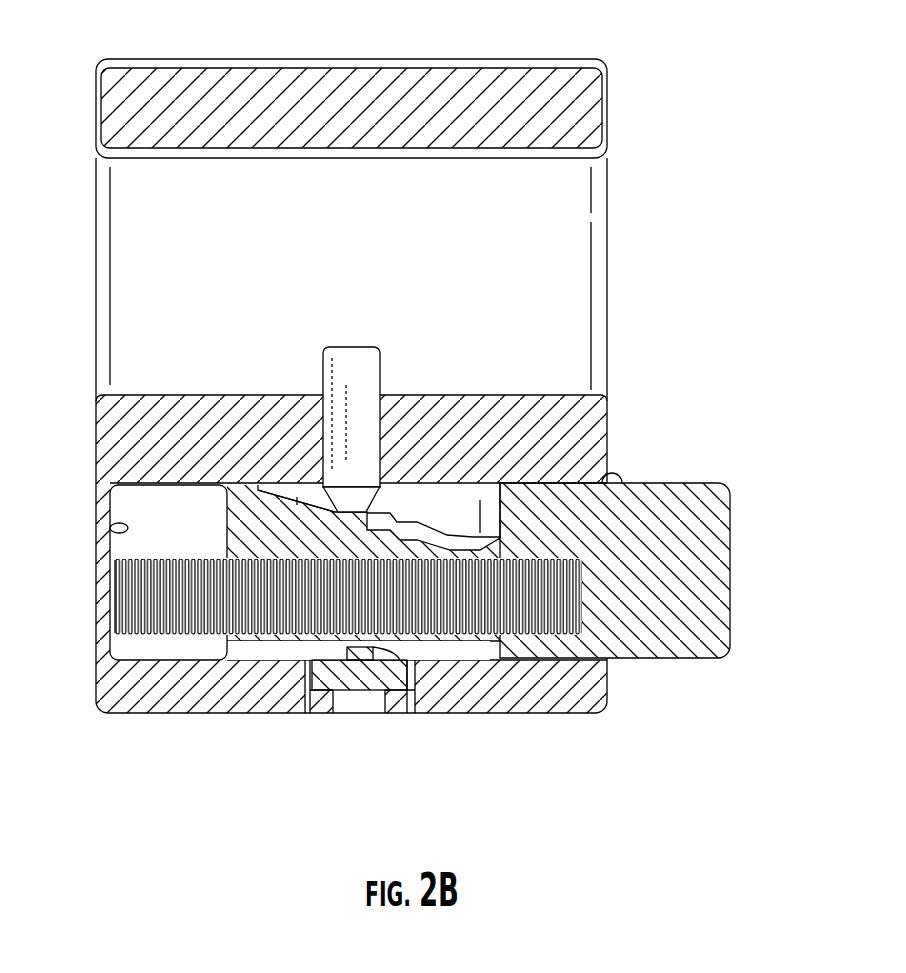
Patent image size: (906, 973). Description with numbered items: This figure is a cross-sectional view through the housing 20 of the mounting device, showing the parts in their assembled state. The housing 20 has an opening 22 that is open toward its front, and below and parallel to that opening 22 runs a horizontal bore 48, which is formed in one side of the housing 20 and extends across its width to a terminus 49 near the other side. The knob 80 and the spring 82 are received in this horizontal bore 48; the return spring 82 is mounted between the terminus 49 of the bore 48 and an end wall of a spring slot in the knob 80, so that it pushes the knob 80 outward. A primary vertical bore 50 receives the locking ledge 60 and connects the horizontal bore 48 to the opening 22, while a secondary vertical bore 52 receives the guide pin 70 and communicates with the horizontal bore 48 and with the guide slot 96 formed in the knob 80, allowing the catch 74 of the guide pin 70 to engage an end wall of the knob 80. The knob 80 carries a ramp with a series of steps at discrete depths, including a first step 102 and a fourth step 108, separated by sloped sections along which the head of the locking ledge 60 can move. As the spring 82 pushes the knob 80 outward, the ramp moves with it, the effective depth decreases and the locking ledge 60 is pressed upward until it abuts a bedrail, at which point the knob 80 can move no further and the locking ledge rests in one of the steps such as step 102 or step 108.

The housing 20 is at (528, 54).
The opening 22 is at (622, 278).
The horizontal bore 48 is at (188, 541).
The terminus 49 is at (112, 532).
The primary vertical bore 50 is at (325, 425).
The secondary vertical bore 52 is at (346, 738).
The locking ledge 60 is at (368, 370).
The guide pin 70 is at (412, 690).
The catch 74 is at (405, 690).
The knob 80 is at (739, 600).
The spring 82 is at (468, 603).
The guide slot 96 is at (467, 628).
The first step 102 is at (460, 540).
The fourth step 108 is at (300, 500).